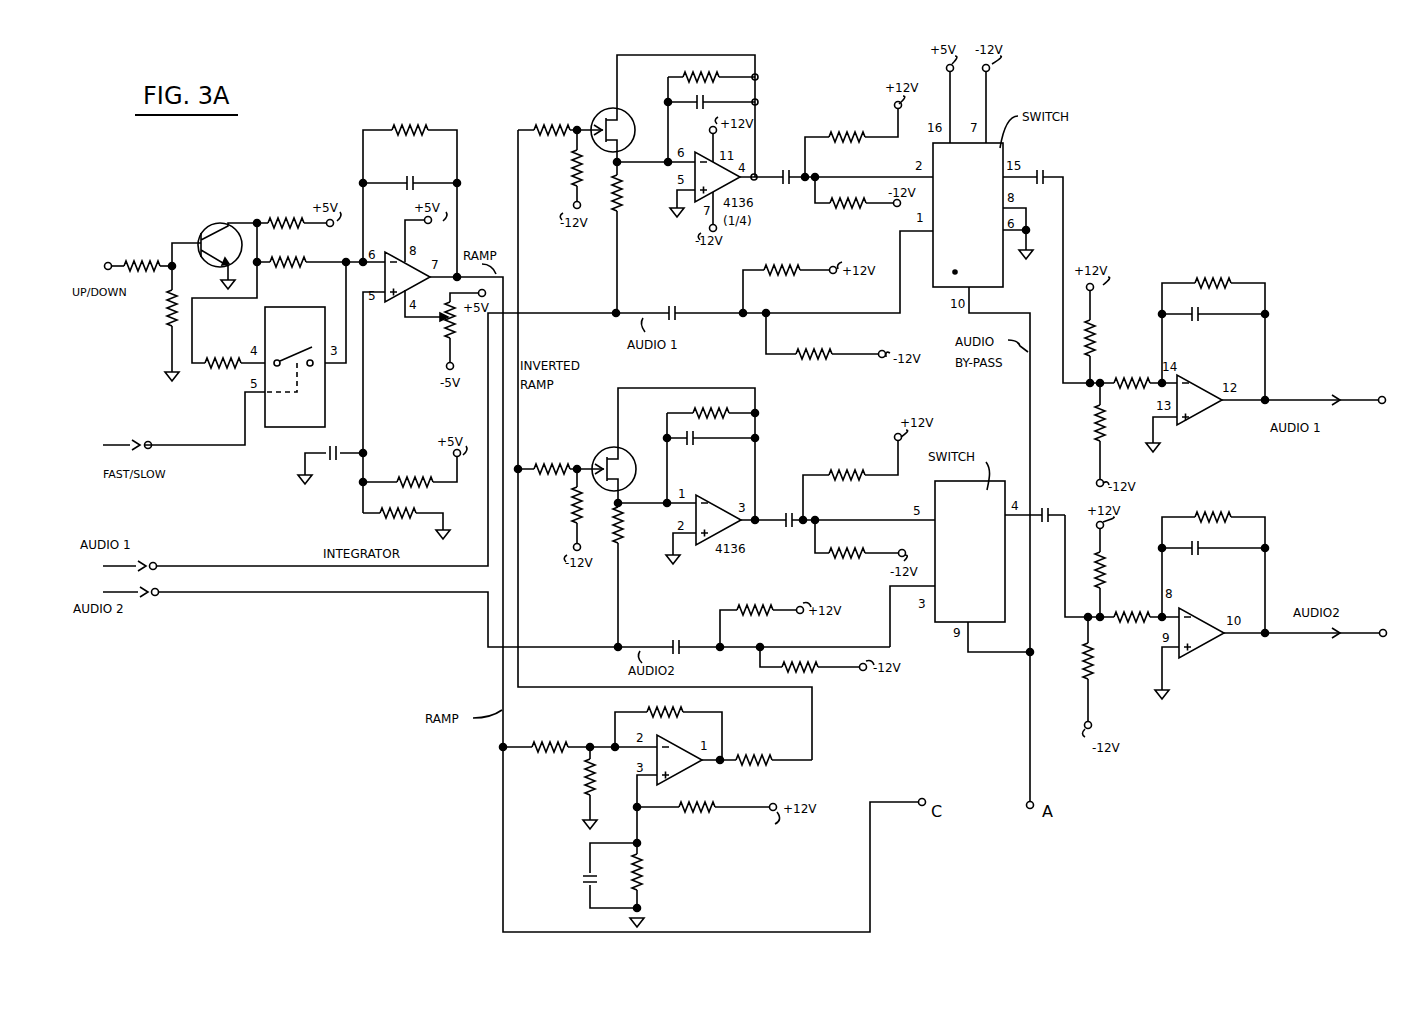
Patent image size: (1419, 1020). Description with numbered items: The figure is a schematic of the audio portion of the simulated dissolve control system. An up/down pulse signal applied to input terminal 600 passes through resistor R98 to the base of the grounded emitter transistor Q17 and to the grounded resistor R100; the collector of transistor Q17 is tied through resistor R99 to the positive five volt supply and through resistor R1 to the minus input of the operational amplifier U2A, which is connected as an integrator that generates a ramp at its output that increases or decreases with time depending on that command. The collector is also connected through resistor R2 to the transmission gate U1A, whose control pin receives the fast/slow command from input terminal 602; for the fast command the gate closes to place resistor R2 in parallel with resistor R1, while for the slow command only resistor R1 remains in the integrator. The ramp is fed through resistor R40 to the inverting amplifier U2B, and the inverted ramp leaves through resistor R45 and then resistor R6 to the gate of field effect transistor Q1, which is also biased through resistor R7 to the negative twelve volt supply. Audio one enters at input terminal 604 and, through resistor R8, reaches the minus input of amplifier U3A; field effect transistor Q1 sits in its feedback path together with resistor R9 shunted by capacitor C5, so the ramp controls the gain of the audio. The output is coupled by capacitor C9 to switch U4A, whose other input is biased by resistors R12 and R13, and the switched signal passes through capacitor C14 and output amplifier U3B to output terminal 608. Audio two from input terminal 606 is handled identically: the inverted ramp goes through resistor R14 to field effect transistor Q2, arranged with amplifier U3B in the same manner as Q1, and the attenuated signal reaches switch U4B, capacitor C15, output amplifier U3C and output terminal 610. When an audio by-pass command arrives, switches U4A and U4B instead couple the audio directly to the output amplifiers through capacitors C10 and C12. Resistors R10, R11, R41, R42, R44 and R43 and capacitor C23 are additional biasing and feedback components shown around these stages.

The input terminal 600 is at (106, 263).
The second input terminal 602 is at (152, 440).
The input terminal 604 is at (156, 564).
The input terminal 606 is at (156, 596).
The output terminal 608 is at (1382, 396).
The output terminal 610 is at (1384, 637).
The resistor R98 is at (158, 244).
The resistor R99 is at (286, 215).
The resistor R100 is at (168, 306).
The resistor R1 is at (302, 264).
The resistor R2 is at (232, 354).
The transistor Q17 is at (218, 224).
The transmission gate U1A is at (295, 367).
The operational amplifier U2A is at (407, 277).
The resistor R6 is at (553, 124).
The resistor R7 is at (572, 170).
The resistor R8 is at (624, 192).
The resistor R9 is at (703, 68).
The field effect transistor Q1 is at (612, 108).
The capacitor C5 is at (700, 106).
The operational amplifier U3A is at (717, 177).
The capacitor C9 is at (788, 165).
The resistor R10 is at (851, 112).
The resistor R11 is at (861, 209).
The capacitor C10 is at (683, 270).
The resistor R12 is at (807, 249).
The resistor R13 is at (830, 358).
The switch U4A is at (968, 215).
The capacitor C14 is at (1042, 165).
The output amplifier U3B is at (1199, 400).
The output amplifier U3C is at (1201, 633).
The capacitor C15 is at (1070, 484).
The switch U4B is at (970, 551).
The resistor R14 is at (562, 440).
The field effect transistor Q2 is at (610, 446).
The capacitor C12 is at (692, 442).
The resistor R40 is at (547, 738).
The resistor R41 is at (584, 775).
The resistor R42 is at (674, 705).
The amplifier U2B is at (679, 760).
The resistor R45 is at (742, 752).
The resistor R44 is at (692, 800).
The resistor R43 is at (643, 870).
The capacitor C23 is at (582, 882).